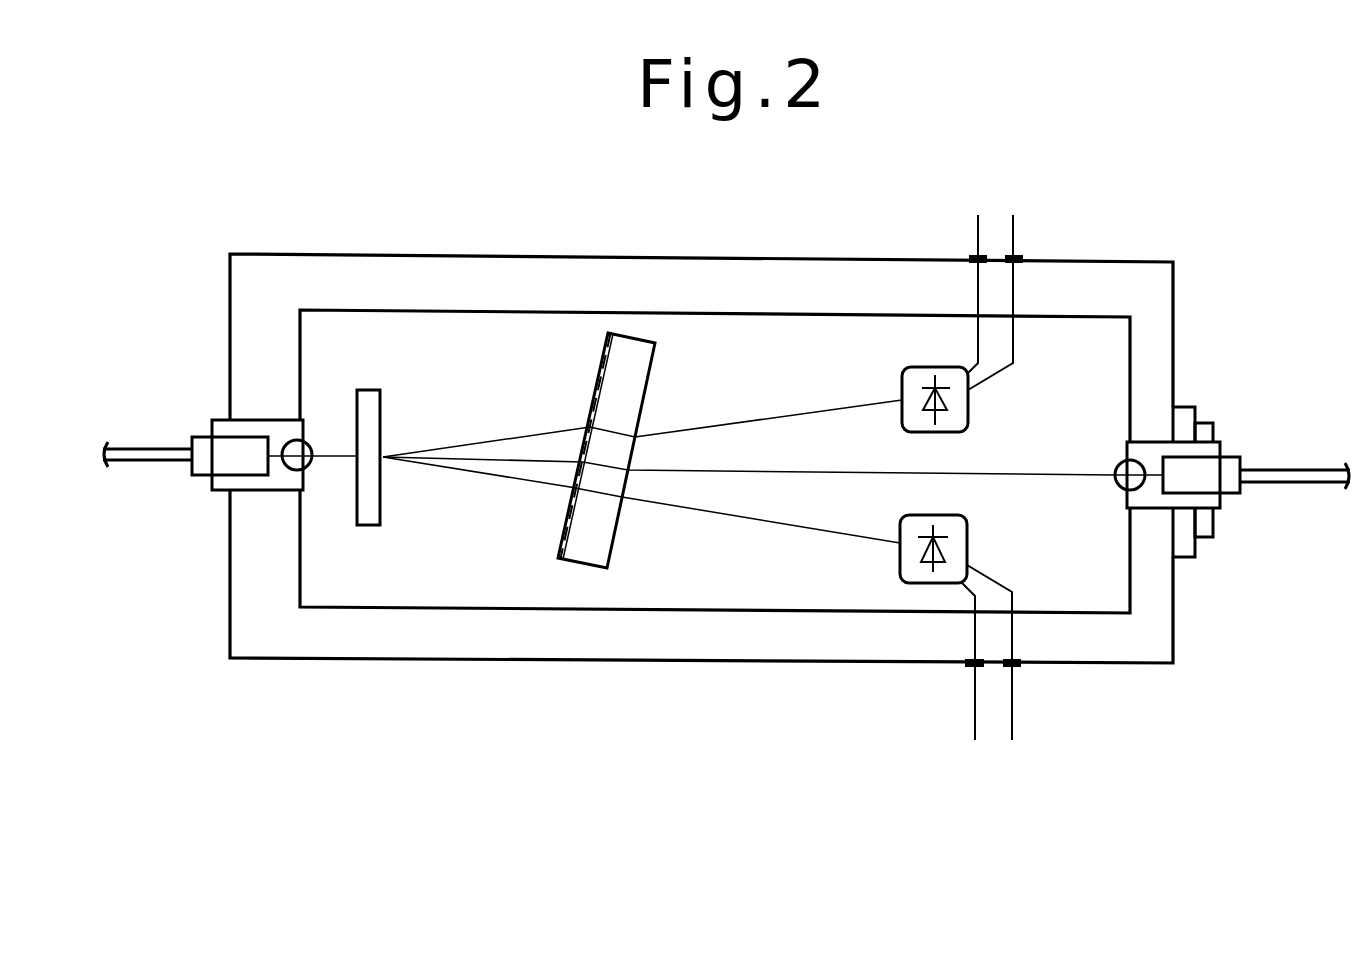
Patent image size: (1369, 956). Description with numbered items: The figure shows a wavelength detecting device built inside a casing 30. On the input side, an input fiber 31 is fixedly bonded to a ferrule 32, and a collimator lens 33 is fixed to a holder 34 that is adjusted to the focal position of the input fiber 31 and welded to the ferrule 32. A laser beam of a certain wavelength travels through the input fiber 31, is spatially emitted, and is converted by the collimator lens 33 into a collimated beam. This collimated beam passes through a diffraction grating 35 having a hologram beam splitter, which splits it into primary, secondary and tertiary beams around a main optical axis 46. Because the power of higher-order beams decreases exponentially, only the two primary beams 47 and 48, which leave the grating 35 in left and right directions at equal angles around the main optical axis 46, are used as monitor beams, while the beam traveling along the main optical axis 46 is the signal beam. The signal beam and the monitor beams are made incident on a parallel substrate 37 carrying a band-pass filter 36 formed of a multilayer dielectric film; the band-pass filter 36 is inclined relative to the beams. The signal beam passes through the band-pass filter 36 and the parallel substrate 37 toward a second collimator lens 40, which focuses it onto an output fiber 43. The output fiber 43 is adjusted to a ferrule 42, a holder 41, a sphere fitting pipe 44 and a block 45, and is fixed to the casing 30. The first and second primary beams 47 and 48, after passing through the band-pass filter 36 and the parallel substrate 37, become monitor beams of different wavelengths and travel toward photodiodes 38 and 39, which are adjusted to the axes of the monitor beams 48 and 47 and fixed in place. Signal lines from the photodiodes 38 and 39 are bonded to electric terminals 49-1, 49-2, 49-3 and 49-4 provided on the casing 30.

The casing 30 is at (699, 255).
The input fiber 31 is at (163, 447).
The ferrule 32 is at (194, 471).
The collimator lens 33 is at (309, 442).
The holder 34 is at (305, 490).
The diffraction grating 35 is at (370, 390).
The band-pass filter 36 is at (602, 372).
The parallel substrate 37 is at (656, 350).
The photodiode 38 is at (902, 381).
The photodiode 39 is at (900, 558).
The collimator lens 40 is at (1121, 463).
The holder 41 is at (1126, 506).
The ferrule 42 is at (1236, 457).
The output fiber 43 is at (1304, 470).
The sphere fitting pipe 44 is at (1207, 538).
The block 45 is at (1186, 559).
The main optical axis 46 is at (522, 465).
The primary beam 47 is at (458, 474).
The primary beam 48 is at (497, 441).
The electric terminal 49-1 is at (974, 256).
The electric terminal 49-2 is at (1020, 256).
The electric terminal 49-3 is at (972, 667).
The electric terminal 49-4 is at (1016, 667).